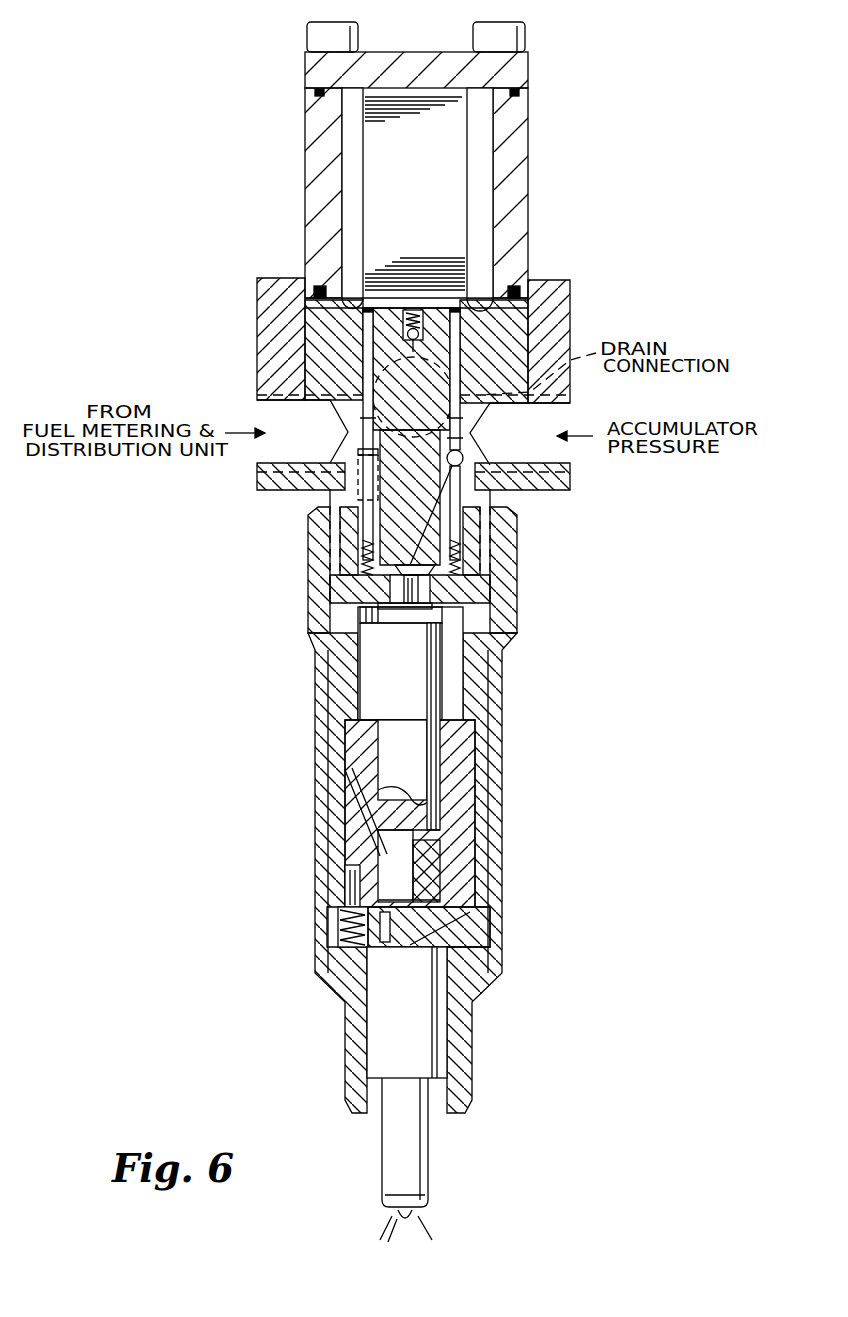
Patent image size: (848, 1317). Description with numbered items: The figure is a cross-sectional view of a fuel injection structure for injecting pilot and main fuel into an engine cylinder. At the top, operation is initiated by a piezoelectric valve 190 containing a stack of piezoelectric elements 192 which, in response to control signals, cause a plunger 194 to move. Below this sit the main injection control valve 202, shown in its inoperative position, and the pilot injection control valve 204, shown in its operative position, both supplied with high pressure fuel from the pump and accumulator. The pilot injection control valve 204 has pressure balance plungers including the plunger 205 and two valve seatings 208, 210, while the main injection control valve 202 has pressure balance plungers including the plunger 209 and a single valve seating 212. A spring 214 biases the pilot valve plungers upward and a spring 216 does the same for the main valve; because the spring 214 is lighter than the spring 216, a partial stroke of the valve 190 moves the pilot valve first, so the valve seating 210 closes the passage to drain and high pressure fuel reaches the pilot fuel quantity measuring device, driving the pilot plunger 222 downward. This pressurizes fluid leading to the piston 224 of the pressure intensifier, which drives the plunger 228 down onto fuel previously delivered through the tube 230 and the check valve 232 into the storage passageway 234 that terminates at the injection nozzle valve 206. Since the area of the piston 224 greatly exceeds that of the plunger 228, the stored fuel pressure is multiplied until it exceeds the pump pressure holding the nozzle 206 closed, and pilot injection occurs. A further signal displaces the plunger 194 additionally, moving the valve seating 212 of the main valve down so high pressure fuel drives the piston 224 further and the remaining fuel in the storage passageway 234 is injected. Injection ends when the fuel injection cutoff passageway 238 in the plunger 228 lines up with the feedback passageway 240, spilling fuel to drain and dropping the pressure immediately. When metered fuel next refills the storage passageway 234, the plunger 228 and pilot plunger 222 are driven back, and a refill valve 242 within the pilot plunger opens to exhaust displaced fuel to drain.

The valve 190 is at (528, 106).
The stack of piezoelectric elements 192 is at (455, 188).
The plunger 194 is at (528, 268).
The main injection control valve 202 is at (363, 350).
The pilot injection control valve 204 is at (530, 325).
The pressure balance plunger 205 is at (492, 497).
The injection nozzle valve 206 is at (430, 1168).
The valve seating 208 is at (480, 440).
The pressure balance plunger 209 is at (367, 500).
The valve seating 210 is at (467, 458).
The valve seating 212 is at (345, 438).
The spring 214 is at (462, 556).
The spring 216 is at (345, 568).
The pilot plunger 222 is at (330, 603).
The piston 224 is at (452, 680).
The plunger 228 is at (445, 765).
The tube 230 is at (330, 757).
The check valve 232 is at (333, 903).
The storage passageway 234 is at (435, 922).
The fuel injection cutoff passageway 238 is at (437, 862).
The feedback passageway 240 is at (350, 828).
The refill valve 242 is at (430, 582).